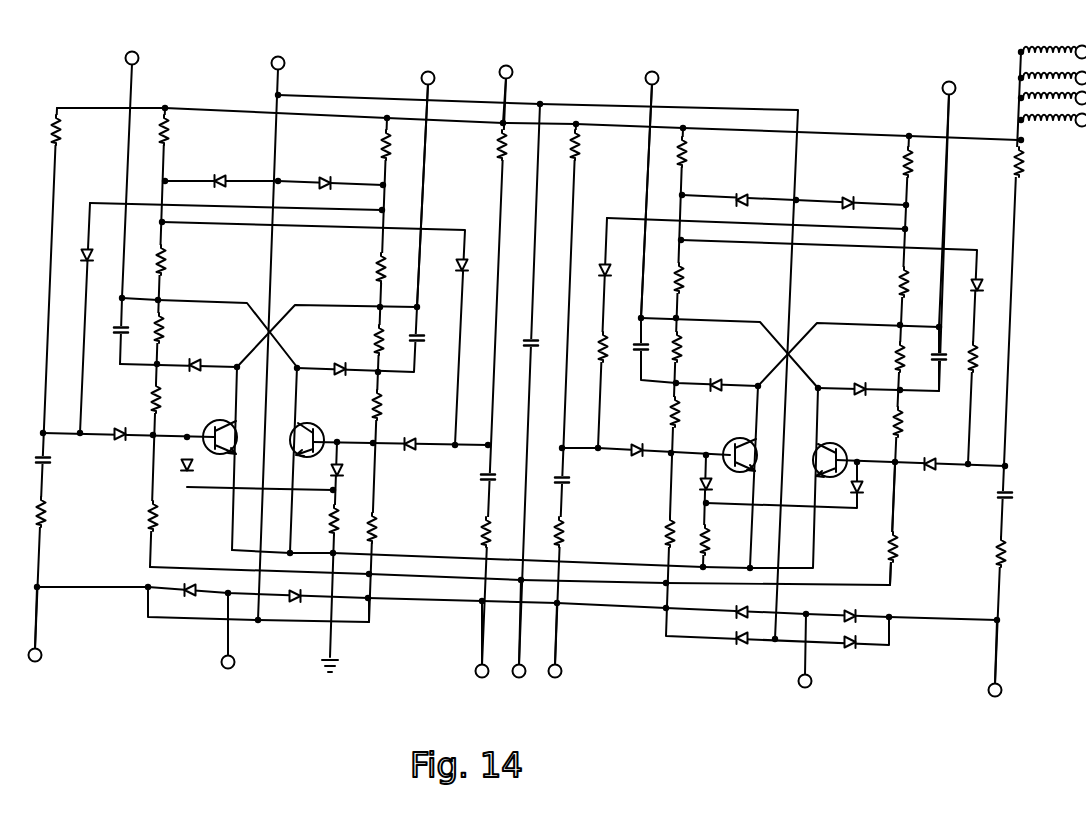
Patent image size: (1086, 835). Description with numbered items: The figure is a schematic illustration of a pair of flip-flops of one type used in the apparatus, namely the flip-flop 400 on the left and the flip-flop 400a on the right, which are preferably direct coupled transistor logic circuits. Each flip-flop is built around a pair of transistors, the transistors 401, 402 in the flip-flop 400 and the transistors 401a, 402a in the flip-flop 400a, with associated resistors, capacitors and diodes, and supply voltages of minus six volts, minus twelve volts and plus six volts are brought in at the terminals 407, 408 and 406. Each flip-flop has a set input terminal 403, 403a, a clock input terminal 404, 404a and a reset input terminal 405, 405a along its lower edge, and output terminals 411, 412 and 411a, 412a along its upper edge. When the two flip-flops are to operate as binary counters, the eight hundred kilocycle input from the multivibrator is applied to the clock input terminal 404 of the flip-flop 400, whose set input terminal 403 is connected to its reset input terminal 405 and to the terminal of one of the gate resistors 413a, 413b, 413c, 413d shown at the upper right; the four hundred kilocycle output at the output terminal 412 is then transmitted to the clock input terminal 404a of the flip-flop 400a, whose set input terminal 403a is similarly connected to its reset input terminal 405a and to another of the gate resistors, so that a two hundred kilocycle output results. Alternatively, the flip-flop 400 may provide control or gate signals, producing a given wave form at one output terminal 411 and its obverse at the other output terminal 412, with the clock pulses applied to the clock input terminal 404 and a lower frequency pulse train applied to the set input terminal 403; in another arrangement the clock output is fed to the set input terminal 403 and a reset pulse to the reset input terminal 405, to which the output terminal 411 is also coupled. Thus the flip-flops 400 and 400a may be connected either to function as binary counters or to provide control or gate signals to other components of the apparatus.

The flip-flop 400 is at (169, 662).
The flip-flop 400a is at (702, 712).
The transistor 401 is at (213, 422).
The transistor 402 is at (318, 428).
The transistor 401a is at (736, 441).
The transistor 402a is at (840, 447).
The set input terminal 403 is at (40, 662).
The set input terminal 403a is at (556, 678).
The clock input terminal 404 is at (228, 669).
The clock input terminal 404a is at (804, 688).
The reset input terminal 405 is at (478, 678).
The reset input terminal 405a is at (993, 697).
The +6v supply terminal 406 is at (517, 678).
The -6v supply terminal 407 is at (308, 52).
The -12v supply terminal 408 is at (546, 60).
The output terminal 411 is at (137, 56).
The terminal 411a is at (657, 76).
The output terminal 412 is at (428, 66).
The terminal 412a is at (944, 84).
The gate resistor 413a is at (1048, 50).
The gate resistor 413b is at (1032, 76).
The gate resistor 413c is at (1034, 96).
The gate resistor 413d is at (1034, 118).